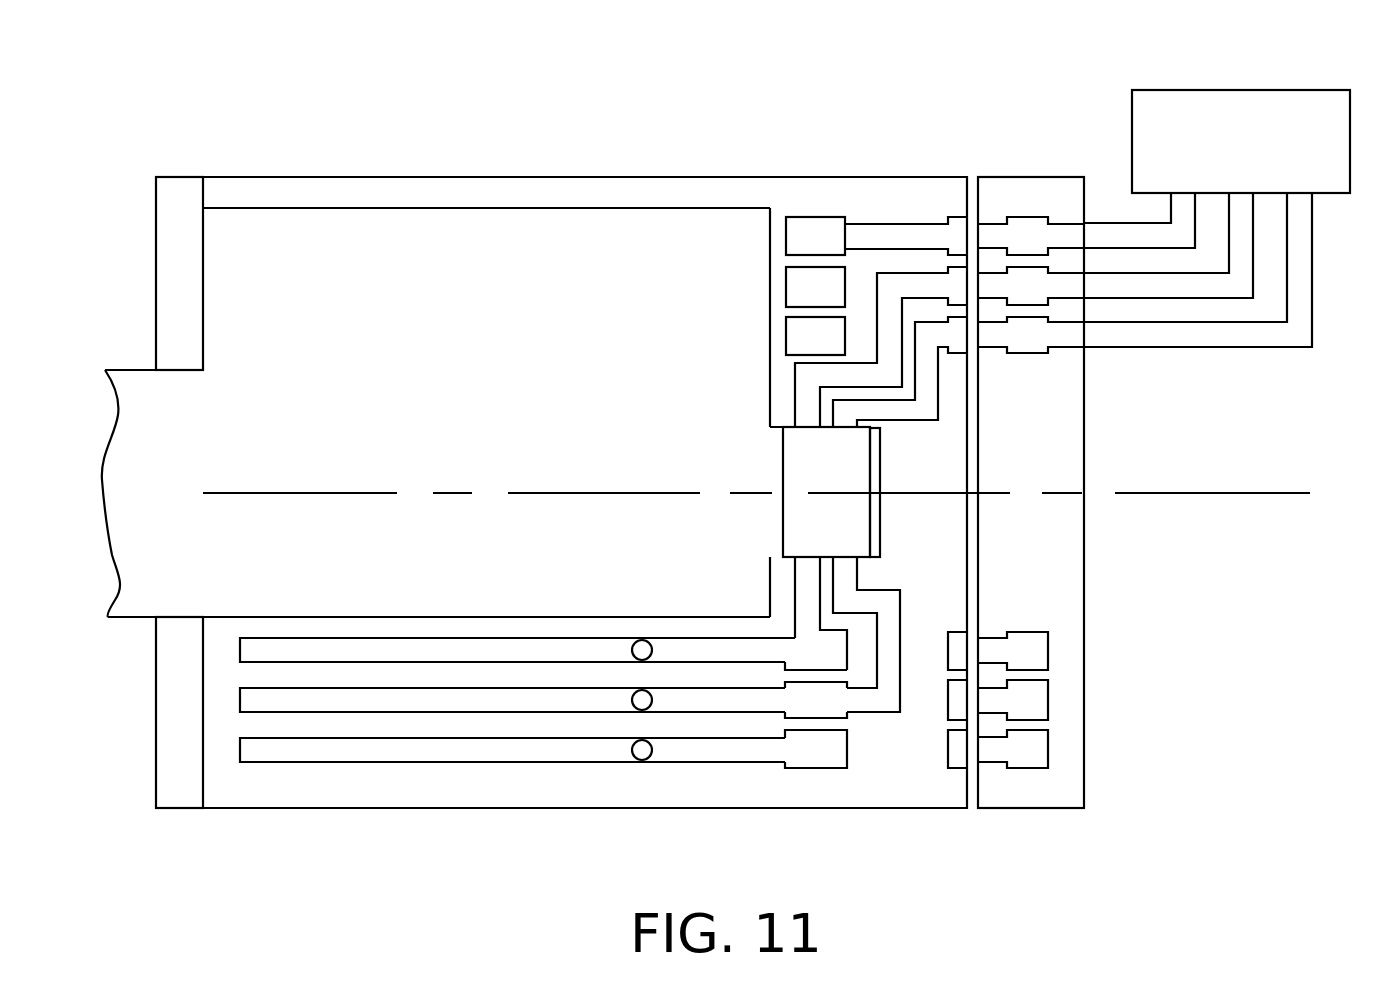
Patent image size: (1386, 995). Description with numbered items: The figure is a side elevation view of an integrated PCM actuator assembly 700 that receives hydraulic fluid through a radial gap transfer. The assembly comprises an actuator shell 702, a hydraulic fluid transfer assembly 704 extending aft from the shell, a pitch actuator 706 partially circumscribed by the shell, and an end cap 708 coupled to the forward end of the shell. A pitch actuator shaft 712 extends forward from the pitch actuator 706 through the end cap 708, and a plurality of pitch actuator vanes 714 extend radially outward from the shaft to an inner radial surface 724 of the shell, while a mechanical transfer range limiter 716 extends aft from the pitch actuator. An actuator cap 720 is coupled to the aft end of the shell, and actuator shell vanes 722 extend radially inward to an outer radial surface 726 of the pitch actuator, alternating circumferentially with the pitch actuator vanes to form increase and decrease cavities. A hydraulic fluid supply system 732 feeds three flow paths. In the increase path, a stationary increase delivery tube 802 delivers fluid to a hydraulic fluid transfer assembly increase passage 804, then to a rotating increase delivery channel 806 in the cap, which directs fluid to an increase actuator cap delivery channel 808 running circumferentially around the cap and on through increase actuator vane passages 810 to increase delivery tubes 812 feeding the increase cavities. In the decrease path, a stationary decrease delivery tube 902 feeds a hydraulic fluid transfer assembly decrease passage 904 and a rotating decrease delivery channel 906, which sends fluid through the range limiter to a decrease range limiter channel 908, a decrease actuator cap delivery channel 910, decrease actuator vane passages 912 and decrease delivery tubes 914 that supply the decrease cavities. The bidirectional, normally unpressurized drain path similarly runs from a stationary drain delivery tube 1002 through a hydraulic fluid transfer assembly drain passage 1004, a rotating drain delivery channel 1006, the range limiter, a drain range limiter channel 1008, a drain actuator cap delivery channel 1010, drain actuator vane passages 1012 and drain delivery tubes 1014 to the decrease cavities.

The integrated PCM actuator assembly 700 is at (448, 122).
The actuator shell 702 is at (725, 150).
The hydraulic fluid transfer assembly 704 is at (1178, 631).
The pitch actuator 706 is at (481, 450).
The end cap 708 is at (178, 203).
The pitch actuator shaft 712 is at (152, 493).
The pitch actuator vanes 714 is at (416, 308).
The mechanical transfer range limiter 716 is at (875, 468).
The actuator cap 720 is at (905, 178).
The actuator shell vanes 722 is at (510, 790).
The inner radial surface 724 is at (432, 205).
The outer radial surface 726 is at (465, 617).
The hydraulic fluid supply system 732 is at (1241, 141).
The stationary increase delivery tube 802 is at (1125, 235).
The hydraulic fluid transfer assembly increase passage 804 is at (1027, 230).
The rotating increase delivery channel 806 is at (913, 233).
The increase actuator cap delivery channel 808 is at (788, 233).
The increase actuator vane passages 810 is at (727, 750).
The increase delivery tubes 812 is at (643, 770).
The stationary decrease delivery tube 902 is at (1245, 335).
The hydraulic fluid transfer assembly decrease passage 904 is at (1023, 338).
The rotating decrease delivery channel 906 is at (942, 335).
The decrease range limiter channel 908 is at (810, 605).
The decrease actuator cap delivery channel 910 is at (803, 338).
The decrease actuator vane passages 912 is at (380, 650).
The decrease delivery tubes 914 is at (645, 650).
The stationary drain delivery tube 1002 is at (1149, 287).
The hydraulic fluid transfer assembly drain passage 1004 is at (1037, 287).
The rotating drain delivery channel 1006 is at (798, 297).
The drain range limiter channel 1008 is at (882, 605).
The drain actuator cap delivery channel 1010 is at (912, 285).
The drain actuator vane passages 1012 is at (255, 697).
The drain delivery tubes 1014 is at (642, 700).